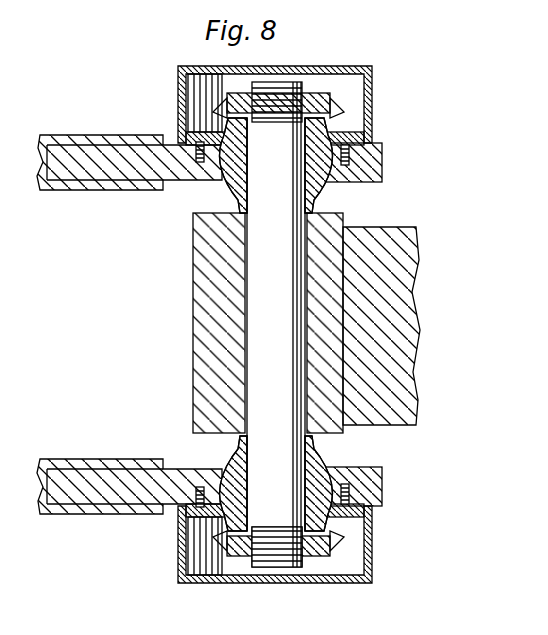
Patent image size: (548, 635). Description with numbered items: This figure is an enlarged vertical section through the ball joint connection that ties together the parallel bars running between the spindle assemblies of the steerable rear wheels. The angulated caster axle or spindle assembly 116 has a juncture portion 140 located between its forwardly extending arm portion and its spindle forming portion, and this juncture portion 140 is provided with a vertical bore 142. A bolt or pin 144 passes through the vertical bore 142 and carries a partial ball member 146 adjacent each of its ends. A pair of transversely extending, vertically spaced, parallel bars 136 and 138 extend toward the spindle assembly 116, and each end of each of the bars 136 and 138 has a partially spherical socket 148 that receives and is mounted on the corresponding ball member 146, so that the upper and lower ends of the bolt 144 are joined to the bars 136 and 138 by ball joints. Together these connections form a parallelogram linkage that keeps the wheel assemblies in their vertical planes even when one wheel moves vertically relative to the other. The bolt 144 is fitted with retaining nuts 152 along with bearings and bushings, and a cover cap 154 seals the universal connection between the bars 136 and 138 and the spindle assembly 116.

The spindle assembly 116 is at (388, 255).
The lower parallel bar 136 is at (48, 470).
The upper parallel bar 138 is at (60, 142).
The juncture portion 140 is at (212, 380).
The vertical bore 142 is at (248, 353).
The bolt 144 is at (258, 250).
The partial ball member 146 is at (321, 172).
The partially spherical socket 148 is at (333, 170).
The retaining nut 152 is at (318, 557).
The cover cap 154 is at (204, 578).